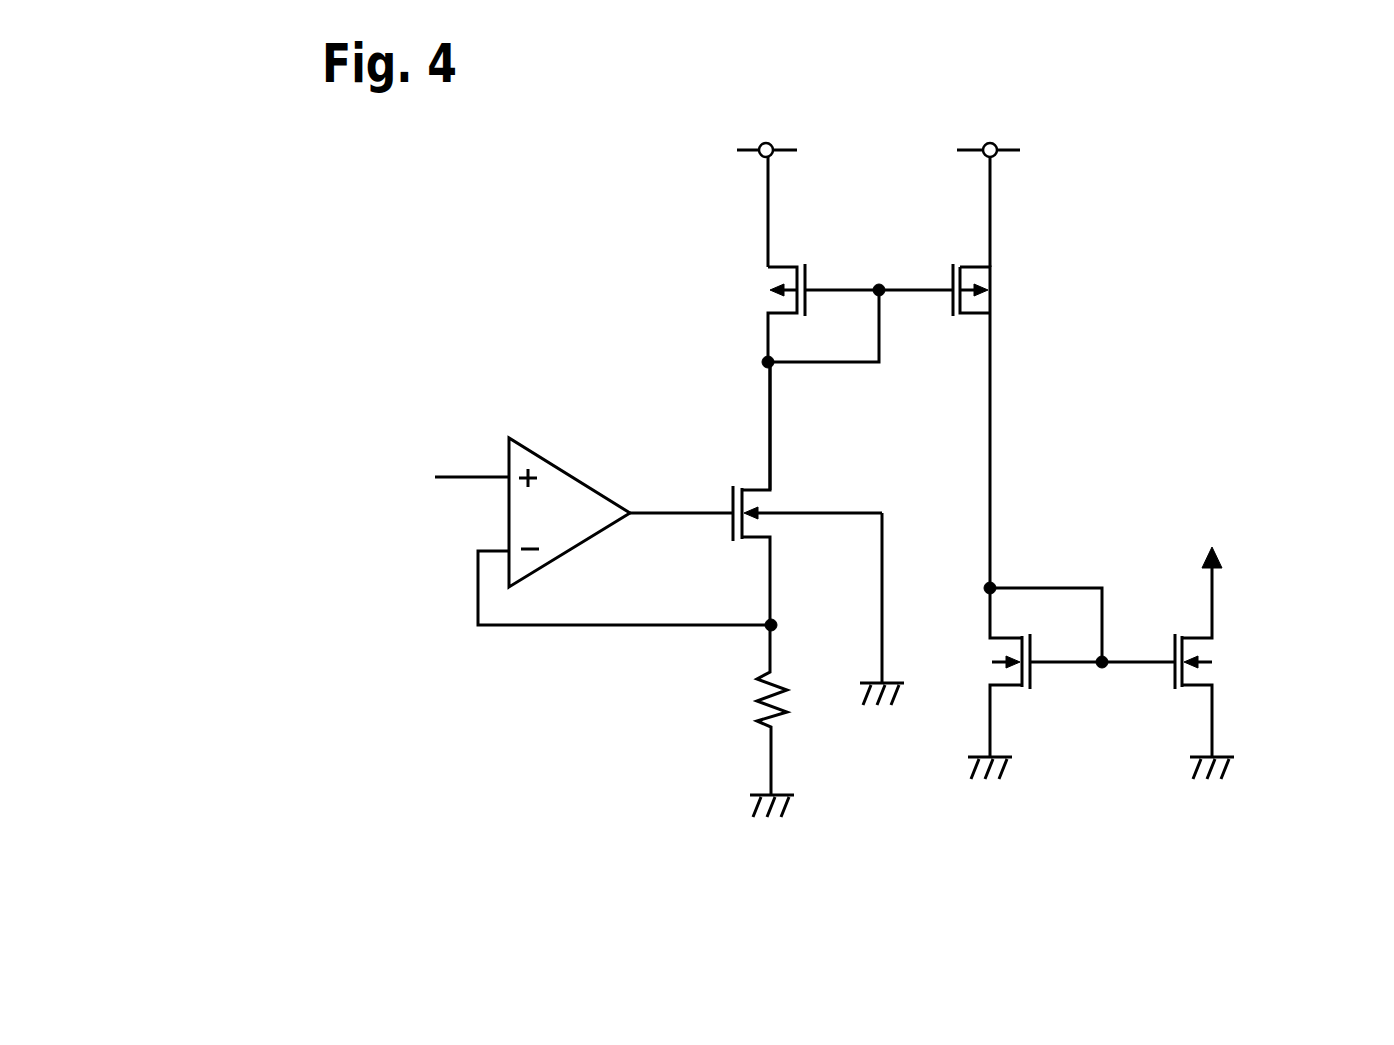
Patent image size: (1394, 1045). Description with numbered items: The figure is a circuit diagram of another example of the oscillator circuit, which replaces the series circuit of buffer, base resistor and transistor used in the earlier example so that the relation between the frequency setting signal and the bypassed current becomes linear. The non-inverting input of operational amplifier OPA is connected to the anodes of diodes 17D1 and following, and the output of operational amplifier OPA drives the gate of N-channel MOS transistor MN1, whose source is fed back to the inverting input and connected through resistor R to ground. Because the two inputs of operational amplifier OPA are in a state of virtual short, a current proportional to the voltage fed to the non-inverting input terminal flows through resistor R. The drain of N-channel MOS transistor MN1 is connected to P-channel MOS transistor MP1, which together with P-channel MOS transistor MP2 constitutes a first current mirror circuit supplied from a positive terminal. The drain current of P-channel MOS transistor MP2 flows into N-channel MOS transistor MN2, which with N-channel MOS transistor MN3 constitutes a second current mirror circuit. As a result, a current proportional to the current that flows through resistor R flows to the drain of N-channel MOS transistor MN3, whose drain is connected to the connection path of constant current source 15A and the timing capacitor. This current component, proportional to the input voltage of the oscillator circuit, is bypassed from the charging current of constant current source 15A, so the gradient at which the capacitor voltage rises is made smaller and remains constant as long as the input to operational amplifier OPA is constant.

The P-channel MOS transistor MP1 is at (754, 313).
The P-channel MOS transistor MP2 is at (1005, 426).
The N-channel MOS transistor MN1 is at (798, 533).
The N-channel MOS transistor MN2 is at (1051, 683).
The N-channel MOS transistor MN3 is at (1231, 663).
The operational amplifier OPA is at (602, 531).
The resistor R is at (761, 721).
The diode 17D1 is at (261, 490).
The constant current source 15A is at (1210, 459).